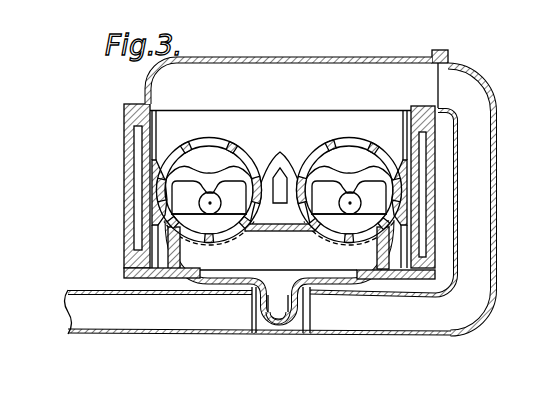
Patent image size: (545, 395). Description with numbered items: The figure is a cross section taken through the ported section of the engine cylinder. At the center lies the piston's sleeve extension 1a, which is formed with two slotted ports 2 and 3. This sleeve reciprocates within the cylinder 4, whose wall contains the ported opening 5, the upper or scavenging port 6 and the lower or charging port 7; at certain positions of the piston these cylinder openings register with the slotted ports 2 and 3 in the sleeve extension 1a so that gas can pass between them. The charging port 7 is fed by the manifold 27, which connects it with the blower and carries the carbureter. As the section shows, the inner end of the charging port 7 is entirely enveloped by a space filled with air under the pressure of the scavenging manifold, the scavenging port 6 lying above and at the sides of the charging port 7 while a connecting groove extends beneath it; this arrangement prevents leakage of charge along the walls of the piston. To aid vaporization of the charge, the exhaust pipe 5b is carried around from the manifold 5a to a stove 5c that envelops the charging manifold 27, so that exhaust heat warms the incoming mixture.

The sleeve extension 1a is at (240, 140).
The slotted port 2 is at (238, 234).
The slotted port 3 is at (172, 158).
The cylinder 4 is at (438, 177).
The ported opening 5 is at (202, 118).
The manifold 5a is at (316, 58).
The exhaust pipe 5b is at (118, 312).
The stove 5c is at (262, 332).
The scavenging port 6 is at (160, 252).
The charging port 7 is at (200, 250).
The manifold 27 is at (279, 296).